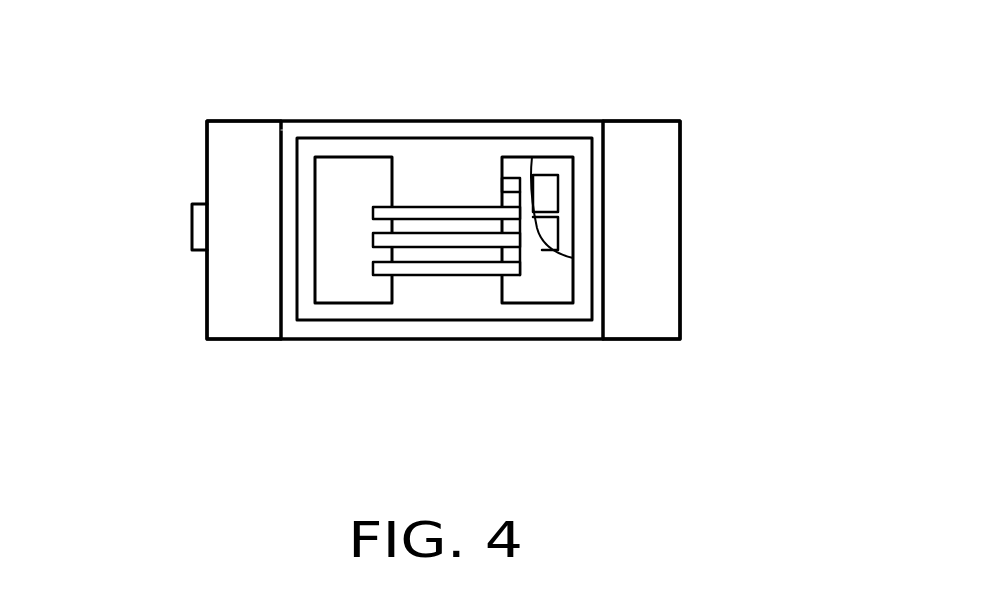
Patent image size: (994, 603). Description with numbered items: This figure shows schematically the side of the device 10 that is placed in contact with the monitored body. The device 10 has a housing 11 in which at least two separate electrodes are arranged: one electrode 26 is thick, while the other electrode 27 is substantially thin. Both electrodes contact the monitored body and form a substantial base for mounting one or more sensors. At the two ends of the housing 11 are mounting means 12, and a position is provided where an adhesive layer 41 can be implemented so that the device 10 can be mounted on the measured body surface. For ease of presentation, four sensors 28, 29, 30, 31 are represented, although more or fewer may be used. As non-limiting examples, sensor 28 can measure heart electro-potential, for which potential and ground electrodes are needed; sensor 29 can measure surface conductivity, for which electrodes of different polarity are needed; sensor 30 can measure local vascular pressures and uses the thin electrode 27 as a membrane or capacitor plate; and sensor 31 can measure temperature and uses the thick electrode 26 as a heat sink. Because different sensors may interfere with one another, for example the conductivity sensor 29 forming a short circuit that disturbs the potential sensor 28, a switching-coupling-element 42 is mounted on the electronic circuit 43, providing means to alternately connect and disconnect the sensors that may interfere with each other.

The device 10 is at (352, 230).
The housing 11 is at (582, 120).
The mounting means 12 is at (230, 308).
The thick electrode 26 is at (353, 178).
The thin electrode 27 is at (520, 165).
The sensor 28 is at (428, 238).
The sensor 29 is at (493, 270).
The sensor 30 is at (420, 210).
The sensor 31 is at (512, 182).
The adhesive layer 41 is at (610, 353).
The switching-coupling-element 42 is at (550, 186).
The electronic circuit 43 is at (593, 270).